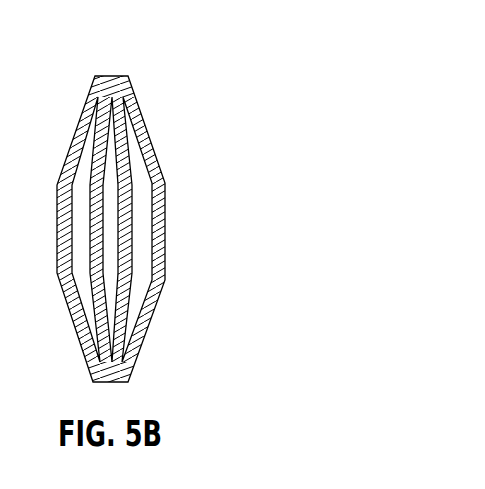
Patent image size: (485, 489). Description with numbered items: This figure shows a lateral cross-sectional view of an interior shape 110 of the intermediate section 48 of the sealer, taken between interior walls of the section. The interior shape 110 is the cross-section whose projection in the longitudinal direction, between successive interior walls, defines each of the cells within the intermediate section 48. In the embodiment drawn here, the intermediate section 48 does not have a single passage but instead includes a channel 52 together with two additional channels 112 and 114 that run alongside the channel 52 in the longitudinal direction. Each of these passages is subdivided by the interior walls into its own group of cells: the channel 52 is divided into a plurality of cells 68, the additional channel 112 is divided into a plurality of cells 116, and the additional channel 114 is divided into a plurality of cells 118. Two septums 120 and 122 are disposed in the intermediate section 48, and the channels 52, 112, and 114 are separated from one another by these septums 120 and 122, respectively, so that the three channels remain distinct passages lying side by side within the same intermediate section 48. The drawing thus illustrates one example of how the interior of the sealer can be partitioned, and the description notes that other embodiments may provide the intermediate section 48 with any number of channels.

The intermediate section 48 is at (128, 195).
The interior shape 110 is at (105, 76).
The additional channel 112 is at (165, 229).
The additional channel 114 is at (170, 232).
The plurality of cells 116 is at (163, 229).
The plurality of cells 118 is at (94, 139).
The septum 120 is at (146, 327).
The septum 122 is at (98, 315).
The plurality of cells 68 is at (168, 232).
The channel 52 is at (137, 263).